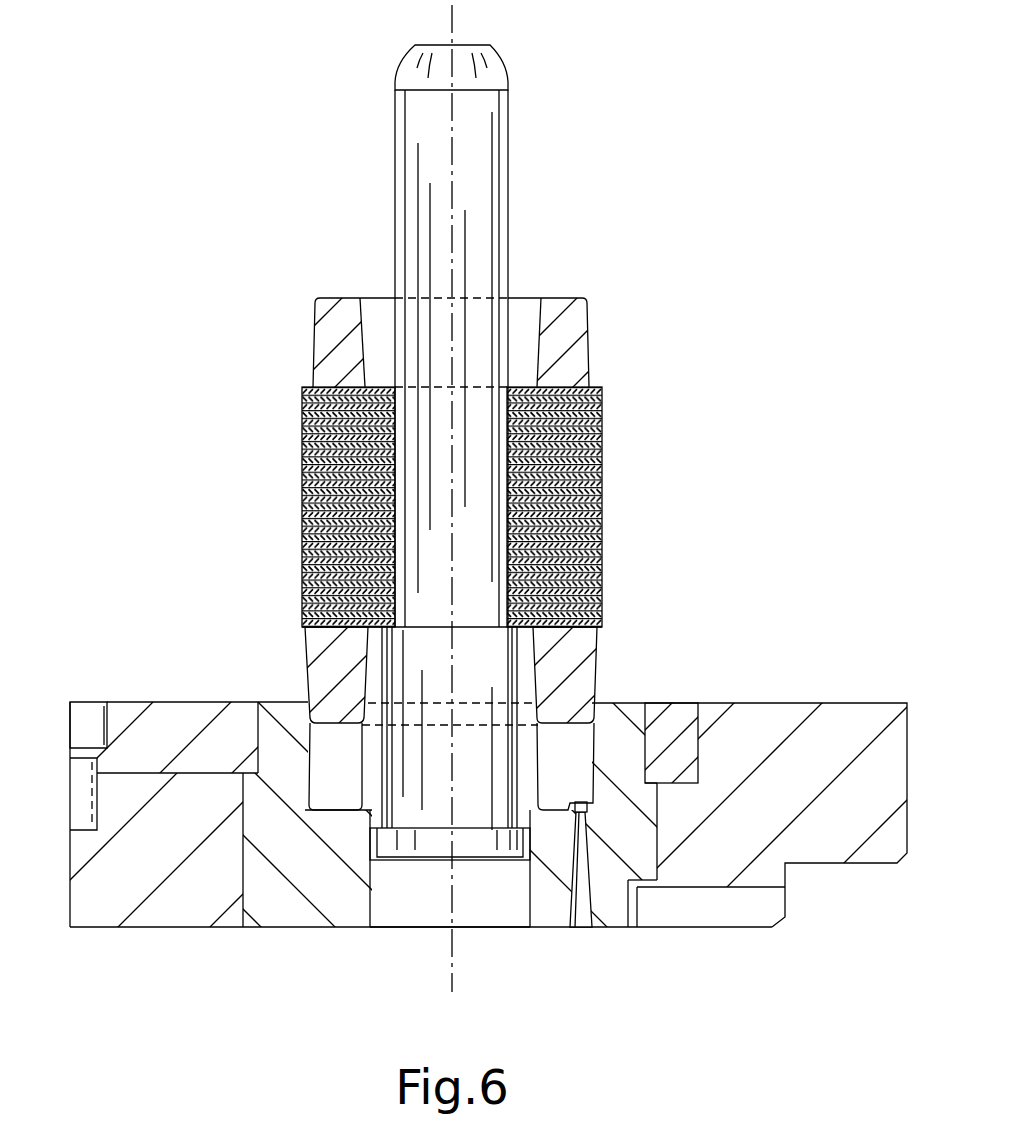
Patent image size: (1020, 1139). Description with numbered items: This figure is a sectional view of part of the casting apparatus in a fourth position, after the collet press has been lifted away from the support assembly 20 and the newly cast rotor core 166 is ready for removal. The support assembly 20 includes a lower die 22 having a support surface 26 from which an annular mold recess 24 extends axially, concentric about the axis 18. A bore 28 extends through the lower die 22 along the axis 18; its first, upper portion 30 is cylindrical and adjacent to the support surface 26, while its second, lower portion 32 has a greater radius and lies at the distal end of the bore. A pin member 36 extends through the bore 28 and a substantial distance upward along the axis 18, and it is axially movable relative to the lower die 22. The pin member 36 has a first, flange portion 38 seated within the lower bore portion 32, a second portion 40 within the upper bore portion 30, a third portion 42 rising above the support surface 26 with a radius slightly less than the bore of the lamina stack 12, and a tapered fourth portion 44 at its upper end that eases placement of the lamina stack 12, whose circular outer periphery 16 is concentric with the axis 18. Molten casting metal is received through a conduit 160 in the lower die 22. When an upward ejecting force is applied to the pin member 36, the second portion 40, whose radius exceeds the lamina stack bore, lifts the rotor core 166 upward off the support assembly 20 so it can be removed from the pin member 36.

The lamina stack 12 is at (606, 424).
The outer periphery 16 is at (602, 469).
The axis 18 is at (449, 969).
The support assembly 20 is at (172, 938).
The lower die 22 is at (287, 950).
The annular mold recess 24 is at (320, 778).
The support surface 26 is at (812, 702).
The bore 28 is at (385, 888).
The first, upper portion of the bore 30 is at (517, 797).
The second, lower portion of the bore 32 is at (530, 893).
The pin member 36 is at (468, 950).
The first portion of the pin member 38 is at (488, 850).
The second portion of the pin member 40 is at (408, 815).
The third portion of the pin member 42 is at (427, 167).
The fourth portion of the pin member 44 is at (423, 63).
The conduit 160 is at (582, 920).
The rotor core 166 is at (604, 270).